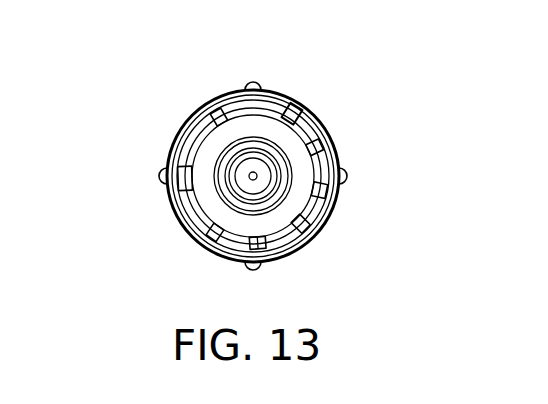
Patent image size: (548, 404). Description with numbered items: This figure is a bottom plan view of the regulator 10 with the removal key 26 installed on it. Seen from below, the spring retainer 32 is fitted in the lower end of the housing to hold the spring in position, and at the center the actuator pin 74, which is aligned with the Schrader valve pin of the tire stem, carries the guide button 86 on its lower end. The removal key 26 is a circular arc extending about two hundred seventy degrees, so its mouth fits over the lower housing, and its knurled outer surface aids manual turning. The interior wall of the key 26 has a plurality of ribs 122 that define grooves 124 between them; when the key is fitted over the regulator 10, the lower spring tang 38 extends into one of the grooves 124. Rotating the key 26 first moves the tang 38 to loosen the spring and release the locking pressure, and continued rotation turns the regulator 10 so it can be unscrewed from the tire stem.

The regulator 10 is at (284, 82).
The removal key 26 is at (172, 234).
The spring retainer 32 is at (237, 132).
The lower spring tang 38 is at (265, 243).
The actuator pin 74 is at (237, 172).
The guide button 86 is at (222, 178).
The ribs 122 is at (322, 160).
The grooves 124 is at (323, 192).